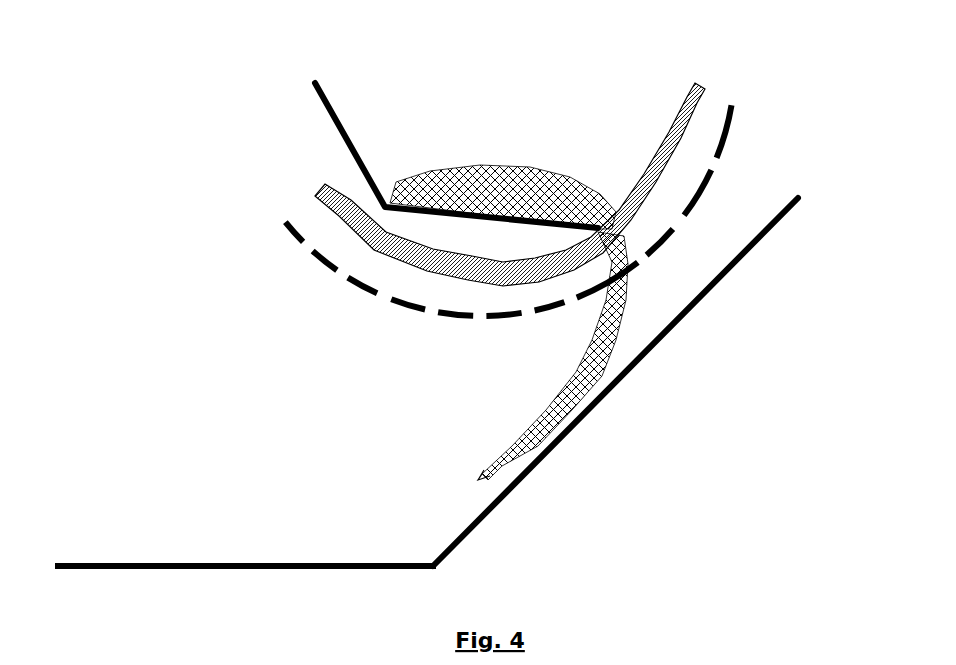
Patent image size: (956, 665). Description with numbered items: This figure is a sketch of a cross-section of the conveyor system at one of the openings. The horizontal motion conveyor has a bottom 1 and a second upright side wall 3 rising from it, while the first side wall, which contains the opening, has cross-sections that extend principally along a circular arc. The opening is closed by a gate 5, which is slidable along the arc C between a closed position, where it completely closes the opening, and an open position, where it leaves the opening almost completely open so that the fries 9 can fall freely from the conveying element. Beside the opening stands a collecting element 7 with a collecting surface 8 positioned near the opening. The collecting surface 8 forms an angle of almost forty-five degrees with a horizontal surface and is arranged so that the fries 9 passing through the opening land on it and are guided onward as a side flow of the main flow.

The bottom 1 is at (452, 215).
The second upright side wall 3 is at (342, 135).
The gate 5 is at (343, 220).
The collecting element 7 is at (192, 563).
The collecting surface 8 is at (557, 443).
The fries 9 is at (488, 195).
The arc C is at (703, 193).